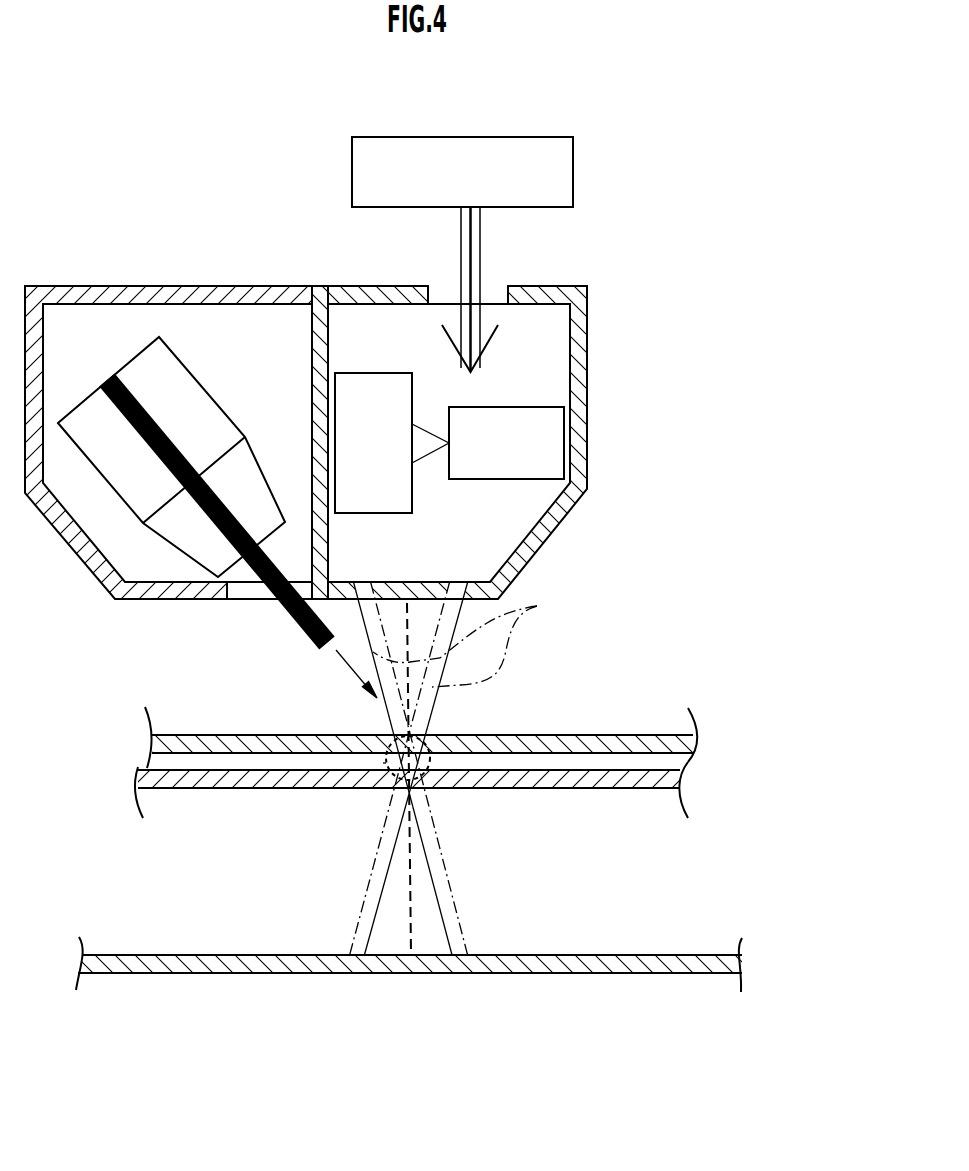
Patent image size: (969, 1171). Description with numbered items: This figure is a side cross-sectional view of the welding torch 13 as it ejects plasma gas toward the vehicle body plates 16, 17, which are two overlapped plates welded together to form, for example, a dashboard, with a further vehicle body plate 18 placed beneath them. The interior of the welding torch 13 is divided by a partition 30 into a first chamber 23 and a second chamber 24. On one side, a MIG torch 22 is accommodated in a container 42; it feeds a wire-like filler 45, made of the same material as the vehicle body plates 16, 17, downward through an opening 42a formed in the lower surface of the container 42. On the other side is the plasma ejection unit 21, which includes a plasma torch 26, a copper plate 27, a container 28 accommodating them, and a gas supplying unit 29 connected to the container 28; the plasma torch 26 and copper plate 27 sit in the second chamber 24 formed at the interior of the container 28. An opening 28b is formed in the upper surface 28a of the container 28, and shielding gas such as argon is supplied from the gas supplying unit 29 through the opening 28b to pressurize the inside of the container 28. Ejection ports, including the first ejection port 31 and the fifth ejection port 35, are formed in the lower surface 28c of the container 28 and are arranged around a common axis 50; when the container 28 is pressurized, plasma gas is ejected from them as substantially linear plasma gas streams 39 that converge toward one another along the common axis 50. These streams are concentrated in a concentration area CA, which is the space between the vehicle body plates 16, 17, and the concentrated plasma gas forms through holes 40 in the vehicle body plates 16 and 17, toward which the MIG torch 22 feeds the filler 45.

The welding torch 13 is at (296, 267).
The container 42 is at (80, 297).
The opening 42a is at (243, 596).
The MIG torch 22 is at (145, 372).
The first chamber 23 is at (97, 349).
The filler 45 is at (300, 617).
The partition 30 is at (312, 335).
The plasma ejection unit 21 is at (603, 306).
The container 28 is at (582, 448).
The upper surface 28a is at (422, 296).
The opening 28b is at (492, 297).
The lower surface 28c is at (432, 584).
The second chamber 24 is at (408, 349).
The copper plate 27 is at (359, 372).
The plasma torch 26 is at (544, 408).
The first ejection port 31 is at (357, 583).
The fifth ejection port 35 is at (455, 583).
The gas supplying unit 29 is at (575, 171).
The plasma gas streams 39 is at (537, 606).
The common axis 50 is at (407, 918).
The through holes 40 is at (409, 738).
The concentration area CA is at (383, 763).
The vehicle body plate 16 is at (602, 745).
The vehicle body plate 17 is at (217, 781).
The vehicle body plate 18 is at (623, 968).